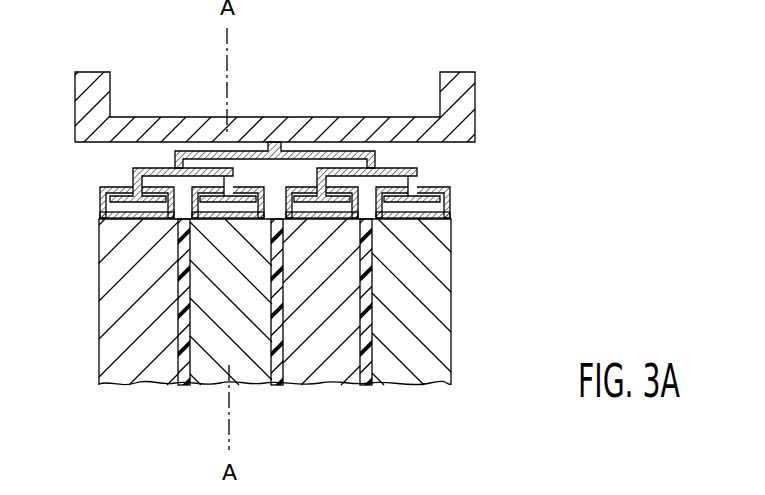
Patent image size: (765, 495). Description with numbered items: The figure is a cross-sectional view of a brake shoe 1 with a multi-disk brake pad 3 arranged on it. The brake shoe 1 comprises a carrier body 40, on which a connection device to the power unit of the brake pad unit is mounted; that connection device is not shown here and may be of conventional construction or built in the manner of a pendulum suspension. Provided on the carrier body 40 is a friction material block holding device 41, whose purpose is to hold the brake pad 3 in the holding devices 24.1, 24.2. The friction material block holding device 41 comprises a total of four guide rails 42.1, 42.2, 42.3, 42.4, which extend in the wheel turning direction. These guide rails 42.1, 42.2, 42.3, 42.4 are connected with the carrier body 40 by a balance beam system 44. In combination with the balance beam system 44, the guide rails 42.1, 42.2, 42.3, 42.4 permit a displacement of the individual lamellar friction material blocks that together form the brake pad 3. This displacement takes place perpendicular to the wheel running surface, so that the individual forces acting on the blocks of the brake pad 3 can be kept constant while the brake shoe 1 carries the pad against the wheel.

The brake shoe 1 is at (334, 106).
The multi-disk brake pad 3 is at (468, 343).
The carrier body 40 is at (478, 99).
The friction material block holding device 41 is at (426, 174).
The balance beam system 44 is at (134, 173).
The holding device 24.1 is at (443, 199).
The holding device 24.2 is at (287, 201).
The guide rail 42.1 is at (425, 220).
The guide rail 42.2 is at (328, 221).
The guide rail 42.3 is at (212, 221).
The guide rail 42.4 is at (113, 220).